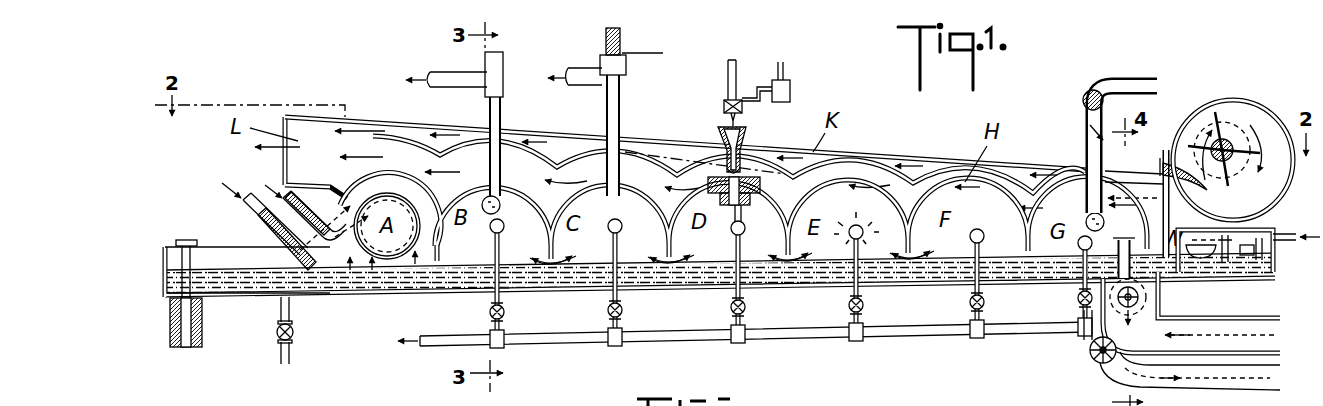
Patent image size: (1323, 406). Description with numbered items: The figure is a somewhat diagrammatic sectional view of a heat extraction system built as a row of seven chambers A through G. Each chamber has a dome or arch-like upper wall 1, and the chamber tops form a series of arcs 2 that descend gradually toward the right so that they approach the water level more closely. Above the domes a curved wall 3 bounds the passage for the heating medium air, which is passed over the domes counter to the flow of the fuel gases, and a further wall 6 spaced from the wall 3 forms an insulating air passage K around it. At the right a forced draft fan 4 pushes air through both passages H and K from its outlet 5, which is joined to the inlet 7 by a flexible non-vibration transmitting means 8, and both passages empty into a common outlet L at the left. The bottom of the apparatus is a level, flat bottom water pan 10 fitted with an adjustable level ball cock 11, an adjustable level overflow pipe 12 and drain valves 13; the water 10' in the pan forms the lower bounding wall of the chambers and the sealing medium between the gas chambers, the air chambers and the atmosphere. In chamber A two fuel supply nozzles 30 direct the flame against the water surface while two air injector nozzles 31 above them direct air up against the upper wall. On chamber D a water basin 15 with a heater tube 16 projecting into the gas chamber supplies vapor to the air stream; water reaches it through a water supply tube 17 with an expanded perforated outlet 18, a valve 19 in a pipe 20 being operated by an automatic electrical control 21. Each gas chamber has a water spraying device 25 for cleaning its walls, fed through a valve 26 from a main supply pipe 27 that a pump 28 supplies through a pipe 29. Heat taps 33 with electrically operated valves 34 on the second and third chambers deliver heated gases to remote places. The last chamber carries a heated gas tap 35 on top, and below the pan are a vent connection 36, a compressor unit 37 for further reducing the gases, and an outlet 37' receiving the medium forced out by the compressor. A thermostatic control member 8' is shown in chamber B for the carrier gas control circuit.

The dome or arch-like upper walls 1 is at (422, 190).
The descending arcs of the chamber tops 2 is at (548, 241).
The wall 3 is at (412, 150).
The forced draft fan 4 is at (1244, 126).
The outlet 5 is at (1190, 222).
The wall 6 is at (930, 156).
The inlet 7 is at (1163, 166).
The flexible non-vibration transmitting means 8 is at (1163, 143).
The thermostatic control member 8' is at (793, 210).
The bottom water pan 10 is at (720, 281).
The water 10' is at (276, 310).
The adjustable level ball cock 11 is at (1249, 258).
The adjustable level overflow pipe 12 is at (192, 262).
The drain valves 13 is at (280, 337).
The water basin 15 is at (762, 190).
The heater tube 16 is at (732, 225).
The water supply tube 17 is at (717, 134).
The expanded perforated outlet 18 is at (740, 168).
The valve 19 is at (724, 105).
The pipe 20 is at (727, 75).
The automatic electrical control 21 is at (776, 80).
The water spraying device 25 is at (492, 236).
The valve 26 is at (624, 310).
The main supply pipe 27 is at (889, 335).
The pump 28 is at (1092, 361).
The pipe 29 is at (1083, 318).
The fuel supply nozzles 30 is at (297, 268).
The air injector nozzles 31 is at (331, 252).
The heat taps 33 is at (502, 124).
The electrically operated valves 34 is at (553, 52).
The heated gas tap 35 is at (1084, 124).
The vent connection 36 is at (1153, 276).
The compressor unit 37 is at (1191, 295).
The outlet 37' is at (1205, 375).